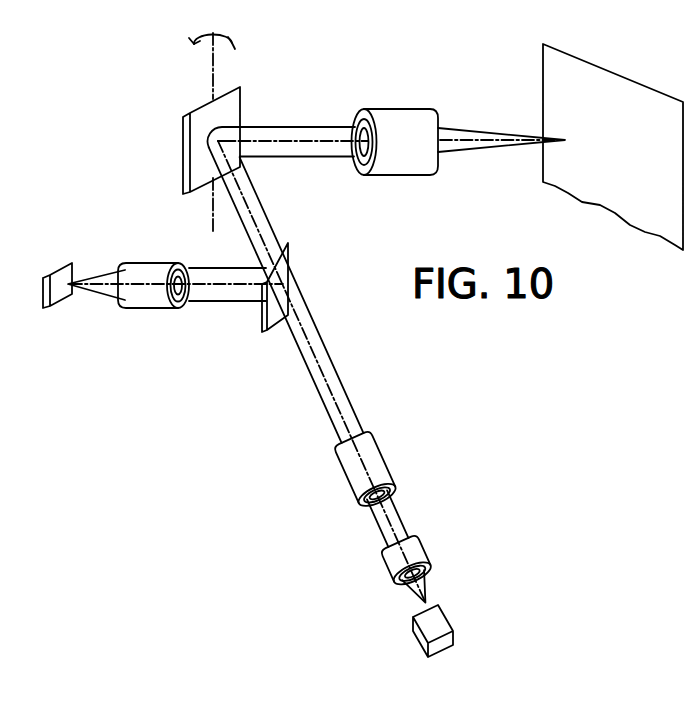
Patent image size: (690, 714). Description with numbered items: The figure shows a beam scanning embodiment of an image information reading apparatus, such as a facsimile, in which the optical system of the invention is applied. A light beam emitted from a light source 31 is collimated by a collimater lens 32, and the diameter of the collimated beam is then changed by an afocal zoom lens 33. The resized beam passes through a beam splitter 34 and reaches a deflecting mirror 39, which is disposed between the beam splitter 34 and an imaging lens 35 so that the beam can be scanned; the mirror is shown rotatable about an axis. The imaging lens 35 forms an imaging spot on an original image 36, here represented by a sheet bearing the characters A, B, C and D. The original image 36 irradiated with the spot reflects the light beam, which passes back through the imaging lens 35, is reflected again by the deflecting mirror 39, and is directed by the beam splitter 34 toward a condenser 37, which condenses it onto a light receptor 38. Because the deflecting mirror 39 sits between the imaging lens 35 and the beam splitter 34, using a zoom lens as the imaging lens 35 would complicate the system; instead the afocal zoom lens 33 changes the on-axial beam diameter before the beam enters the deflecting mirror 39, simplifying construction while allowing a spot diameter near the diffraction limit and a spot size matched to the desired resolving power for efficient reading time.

The light source 31 is at (423, 626).
The collimater lens 32 is at (388, 558).
The afocal zoom lens 33 is at (346, 469).
The beam splitter 34 is at (292, 258).
The imaging lens 35 is at (397, 111).
The original image 36 is at (625, 86).
The condenser 37 is at (165, 265).
The light receptor 38 is at (60, 272).
The deflecting mirror 39 is at (200, 116).